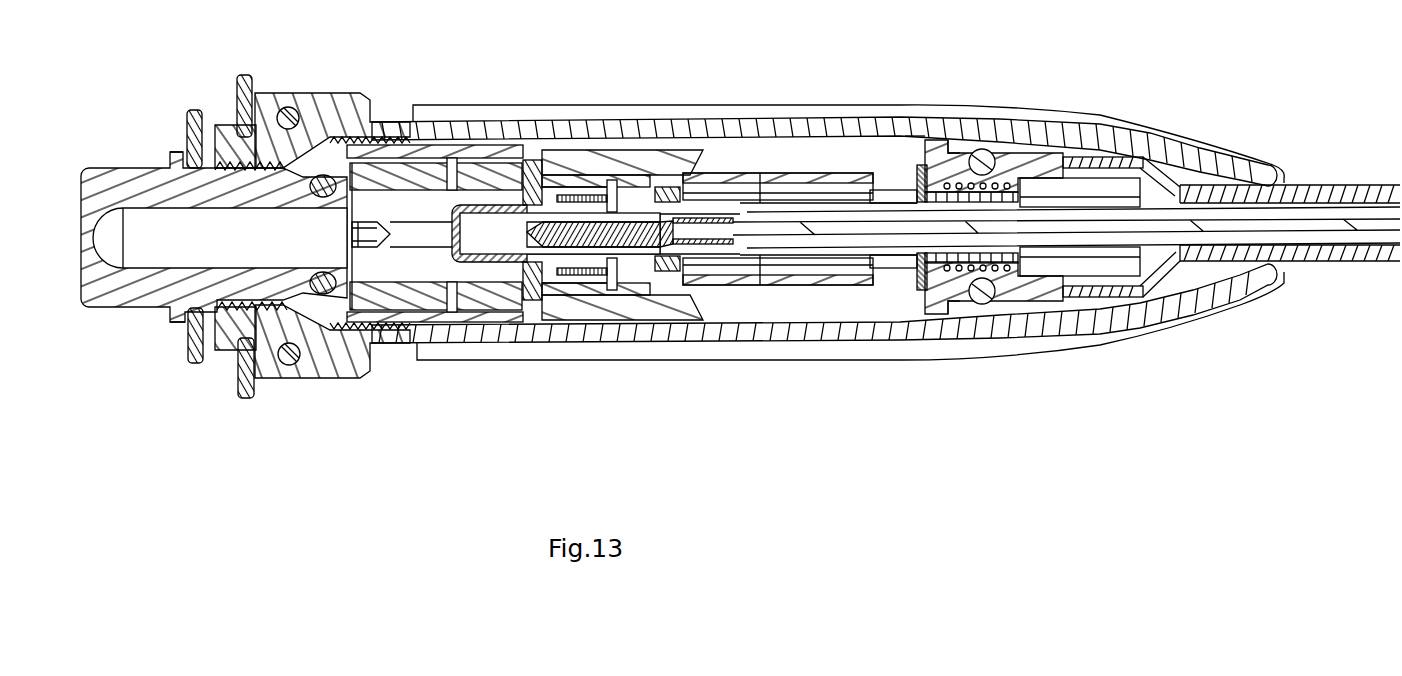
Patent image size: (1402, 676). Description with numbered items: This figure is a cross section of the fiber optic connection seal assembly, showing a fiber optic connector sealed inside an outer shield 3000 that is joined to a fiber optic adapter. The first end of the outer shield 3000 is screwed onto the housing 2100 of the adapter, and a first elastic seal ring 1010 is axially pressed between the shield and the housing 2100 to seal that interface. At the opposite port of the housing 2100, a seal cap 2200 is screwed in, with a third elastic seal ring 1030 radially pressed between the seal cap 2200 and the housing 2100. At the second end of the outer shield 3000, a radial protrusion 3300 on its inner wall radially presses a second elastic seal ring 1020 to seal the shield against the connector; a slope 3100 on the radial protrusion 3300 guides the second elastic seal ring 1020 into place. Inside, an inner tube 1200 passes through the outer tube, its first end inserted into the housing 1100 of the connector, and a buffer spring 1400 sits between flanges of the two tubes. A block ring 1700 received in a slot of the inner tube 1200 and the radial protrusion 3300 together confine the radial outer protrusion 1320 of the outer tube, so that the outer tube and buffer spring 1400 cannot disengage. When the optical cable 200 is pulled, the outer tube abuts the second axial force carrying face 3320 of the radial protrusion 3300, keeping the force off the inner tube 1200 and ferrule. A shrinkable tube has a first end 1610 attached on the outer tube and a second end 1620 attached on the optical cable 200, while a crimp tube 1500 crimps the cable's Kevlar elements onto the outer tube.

The optical cable 200 is at (1352, 248).
The first elastic seal ring 1010 is at (289, 366).
The second elastic seal ring 1020 is at (981, 305).
The third elastic seal ring 1030 is at (324, 178).
The housing of the fiber optic connector 1100 is at (722, 280).
The inner tube 1200 is at (880, 256).
The radial outer protrusion 1320 is at (920, 137).
The buffer spring 1400 is at (1003, 270).
The crimp tube 1500 is at (1117, 298).
The first end of the shrinkable tube 1610 is at (1045, 298).
The second end of the shrinkable tube 1620 is at (1310, 258).
The block ring 1700 is at (922, 291).
The housing of the fiber optic adapter 2100 is at (228, 332).
The seal cap 2200 is at (138, 300).
The outer shield 3000 is at (355, 365).
The slope 3100 is at (968, 301).
The radial protrusion 3300 is at (990, 150).
The second axial force carrying face 3320 is at (950, 150).